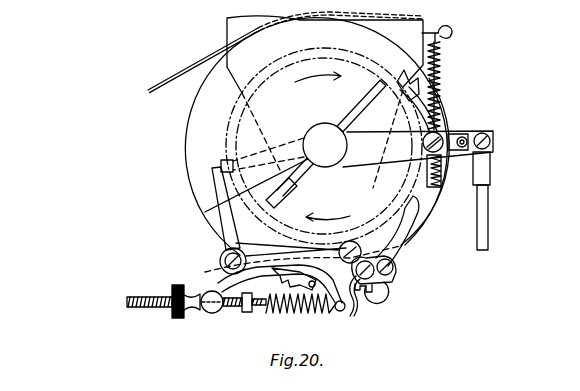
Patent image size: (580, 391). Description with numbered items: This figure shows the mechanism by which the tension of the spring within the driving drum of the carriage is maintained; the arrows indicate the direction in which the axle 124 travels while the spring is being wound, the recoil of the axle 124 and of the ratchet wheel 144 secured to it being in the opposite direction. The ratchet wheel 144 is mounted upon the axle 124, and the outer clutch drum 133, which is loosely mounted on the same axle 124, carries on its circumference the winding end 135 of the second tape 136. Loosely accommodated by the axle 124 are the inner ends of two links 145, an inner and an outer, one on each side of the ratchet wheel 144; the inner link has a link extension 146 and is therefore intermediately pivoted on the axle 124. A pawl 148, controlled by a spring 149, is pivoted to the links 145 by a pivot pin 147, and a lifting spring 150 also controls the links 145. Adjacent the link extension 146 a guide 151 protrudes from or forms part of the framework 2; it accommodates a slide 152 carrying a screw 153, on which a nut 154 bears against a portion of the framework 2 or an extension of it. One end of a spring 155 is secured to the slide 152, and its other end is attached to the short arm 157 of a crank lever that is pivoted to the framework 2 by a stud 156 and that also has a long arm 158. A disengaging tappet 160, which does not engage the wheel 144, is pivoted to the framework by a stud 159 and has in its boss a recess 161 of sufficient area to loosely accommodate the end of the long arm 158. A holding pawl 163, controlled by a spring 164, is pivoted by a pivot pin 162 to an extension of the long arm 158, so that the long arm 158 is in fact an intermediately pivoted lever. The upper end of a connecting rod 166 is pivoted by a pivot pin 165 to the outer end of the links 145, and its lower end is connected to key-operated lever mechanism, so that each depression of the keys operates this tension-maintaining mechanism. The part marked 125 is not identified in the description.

The framework 2 is at (228, 30).
The axle 124 is at (325, 145).
The bar 125 is at (268, 199).
The outer clutch drum 133 is at (203, 132).
The winding end 135 is at (421, 237).
The second tape 136 is at (185, 63).
The ratchet wheel 144 is at (324, 146).
The links 145 is at (506, 175).
The link extension 146 is at (221, 163).
The pivot pin 147 is at (437, 130).
The pawl 148 is at (415, 87).
The spring 149 is at (462, 136).
The lifting spring 150 is at (437, 66).
The guide 151 is at (271, 298).
The slide 152 is at (256, 284).
The screw 153 is at (148, 309).
The nut 154 is at (183, 312).
The spring 155 is at (300, 314).
The stud 156 is at (392, 259).
The short arm 157 is at (357, 300).
The long arm 158 is at (305, 263).
The stud 159 is at (220, 261).
The disengaging tappet 160 is at (216, 231).
The recess 161 is at (230, 272).
The pivot pin 162 is at (392, 278).
The holding pawl 163 is at (413, 218).
The spring 164 is at (390, 296).
The pivot pin 165 is at (494, 145).
The connecting rod 166 is at (480, 218).